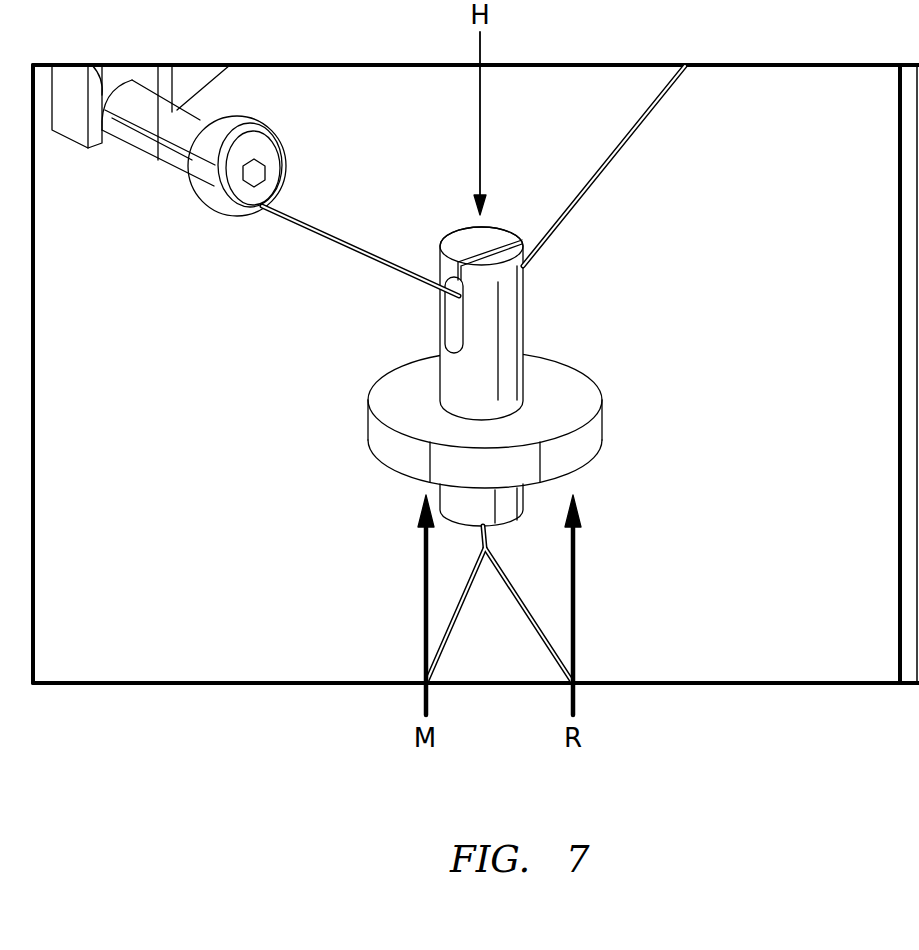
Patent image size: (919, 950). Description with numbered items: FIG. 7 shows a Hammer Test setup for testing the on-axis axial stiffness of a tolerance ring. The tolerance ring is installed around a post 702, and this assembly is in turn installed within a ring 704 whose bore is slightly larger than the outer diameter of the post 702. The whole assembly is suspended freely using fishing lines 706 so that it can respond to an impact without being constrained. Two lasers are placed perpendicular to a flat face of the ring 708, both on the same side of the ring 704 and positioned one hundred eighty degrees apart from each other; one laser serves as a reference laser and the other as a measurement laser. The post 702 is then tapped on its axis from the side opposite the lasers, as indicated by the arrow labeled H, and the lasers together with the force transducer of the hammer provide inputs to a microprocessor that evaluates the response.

The post 702 is at (527, 230).
The ring 704 is at (385, 443).
The fishing lines 706 is at (340, 240).
The flat face of the ring 708 is at (590, 467).